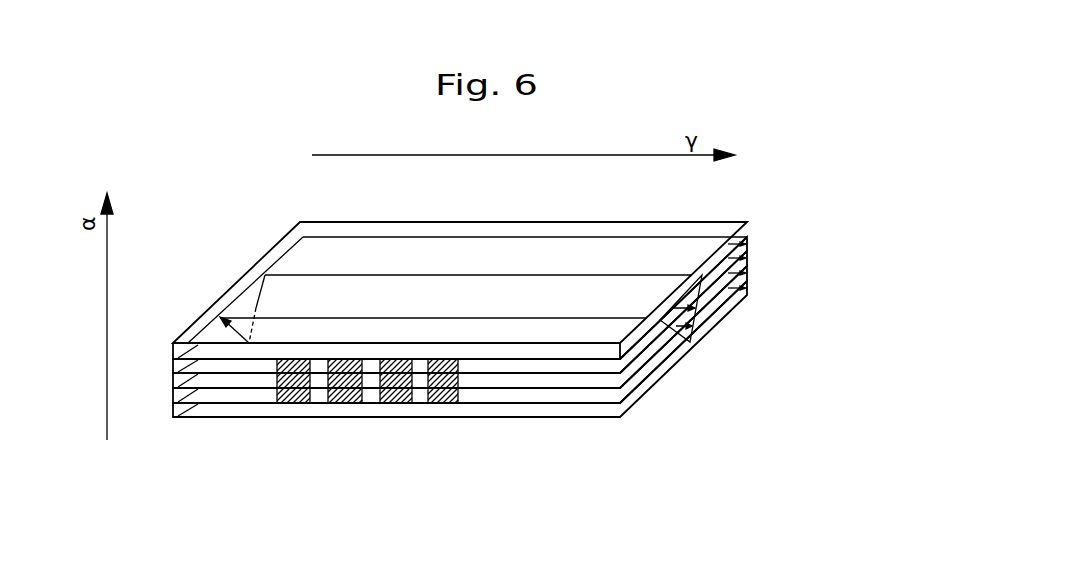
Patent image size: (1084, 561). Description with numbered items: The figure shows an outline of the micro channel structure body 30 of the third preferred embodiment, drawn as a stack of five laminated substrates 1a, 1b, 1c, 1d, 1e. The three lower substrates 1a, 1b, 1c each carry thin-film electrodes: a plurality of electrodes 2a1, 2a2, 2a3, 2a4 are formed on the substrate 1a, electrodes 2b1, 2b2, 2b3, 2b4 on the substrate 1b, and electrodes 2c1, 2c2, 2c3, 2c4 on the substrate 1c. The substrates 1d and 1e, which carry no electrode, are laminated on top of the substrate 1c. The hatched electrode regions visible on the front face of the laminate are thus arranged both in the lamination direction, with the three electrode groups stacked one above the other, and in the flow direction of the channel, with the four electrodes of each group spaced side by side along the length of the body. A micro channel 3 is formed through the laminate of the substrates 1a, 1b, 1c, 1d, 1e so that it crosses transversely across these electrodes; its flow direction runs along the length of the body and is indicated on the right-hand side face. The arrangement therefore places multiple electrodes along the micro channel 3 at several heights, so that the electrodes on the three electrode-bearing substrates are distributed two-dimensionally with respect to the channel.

The micro channel structure body 30 is at (559, 203).
The substrate 1a is at (748, 285).
The substrate 1b is at (748, 272).
The substrate 1c is at (748, 257).
The substrate 1d is at (748, 240).
The substrate 1e is at (748, 222).
The micro channel 3 is at (696, 314).
The electrode 2a1 is at (288, 392).
The electrode 2a2 is at (341, 392).
The electrode 2a3 is at (402, 392).
The electrode 2a4 is at (438, 393).
The electrode 2b1 is at (265, 387).
The electrode 2b2 is at (330, 386).
The electrode 2b3 is at (372, 381).
The electrode 2b4 is at (453, 387).
The electrode 2c1 is at (290, 358).
The electrode 2c2 is at (350, 363).
The electrode 2c3 is at (397, 363).
The electrode 2c4 is at (462, 366).